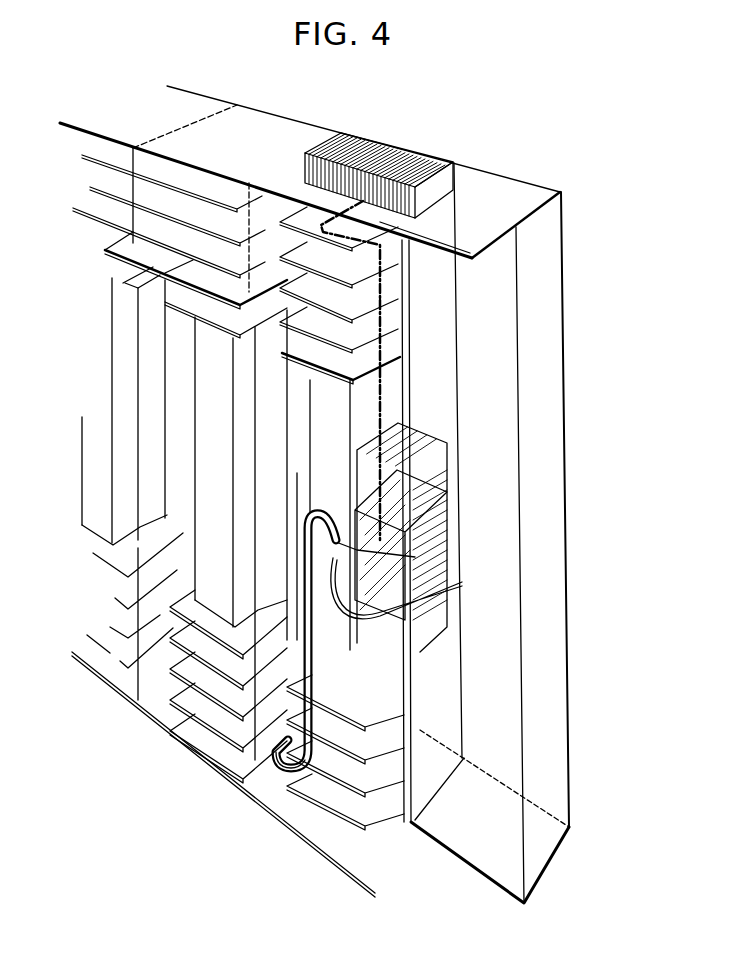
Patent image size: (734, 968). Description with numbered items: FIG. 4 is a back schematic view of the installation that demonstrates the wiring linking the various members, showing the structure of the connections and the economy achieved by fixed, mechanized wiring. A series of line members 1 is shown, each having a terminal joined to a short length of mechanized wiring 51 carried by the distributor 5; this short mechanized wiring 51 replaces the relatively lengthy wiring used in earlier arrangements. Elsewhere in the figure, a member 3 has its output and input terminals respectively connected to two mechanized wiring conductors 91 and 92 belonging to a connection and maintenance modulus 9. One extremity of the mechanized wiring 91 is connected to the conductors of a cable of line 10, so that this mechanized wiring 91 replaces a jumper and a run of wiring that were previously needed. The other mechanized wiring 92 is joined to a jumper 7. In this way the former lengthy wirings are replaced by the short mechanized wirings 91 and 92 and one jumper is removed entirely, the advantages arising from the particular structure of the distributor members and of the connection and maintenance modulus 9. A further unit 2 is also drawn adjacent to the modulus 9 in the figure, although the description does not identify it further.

The line members 1 is at (397, 168).
The thermoelectric cooling unit 2 is at (427, 522).
The member 3 is at (475, 448).
The distributor 5 is at (303, 222).
The mechanized wiring 51 is at (353, 203).
The jumper 7 is at (380, 387).
The connection and maintenance modulus 9 is at (340, 690).
The mechanized wiring 91 is at (388, 580).
The mechanized wiring 92 is at (415, 558).
The line cable 10 is at (315, 753).